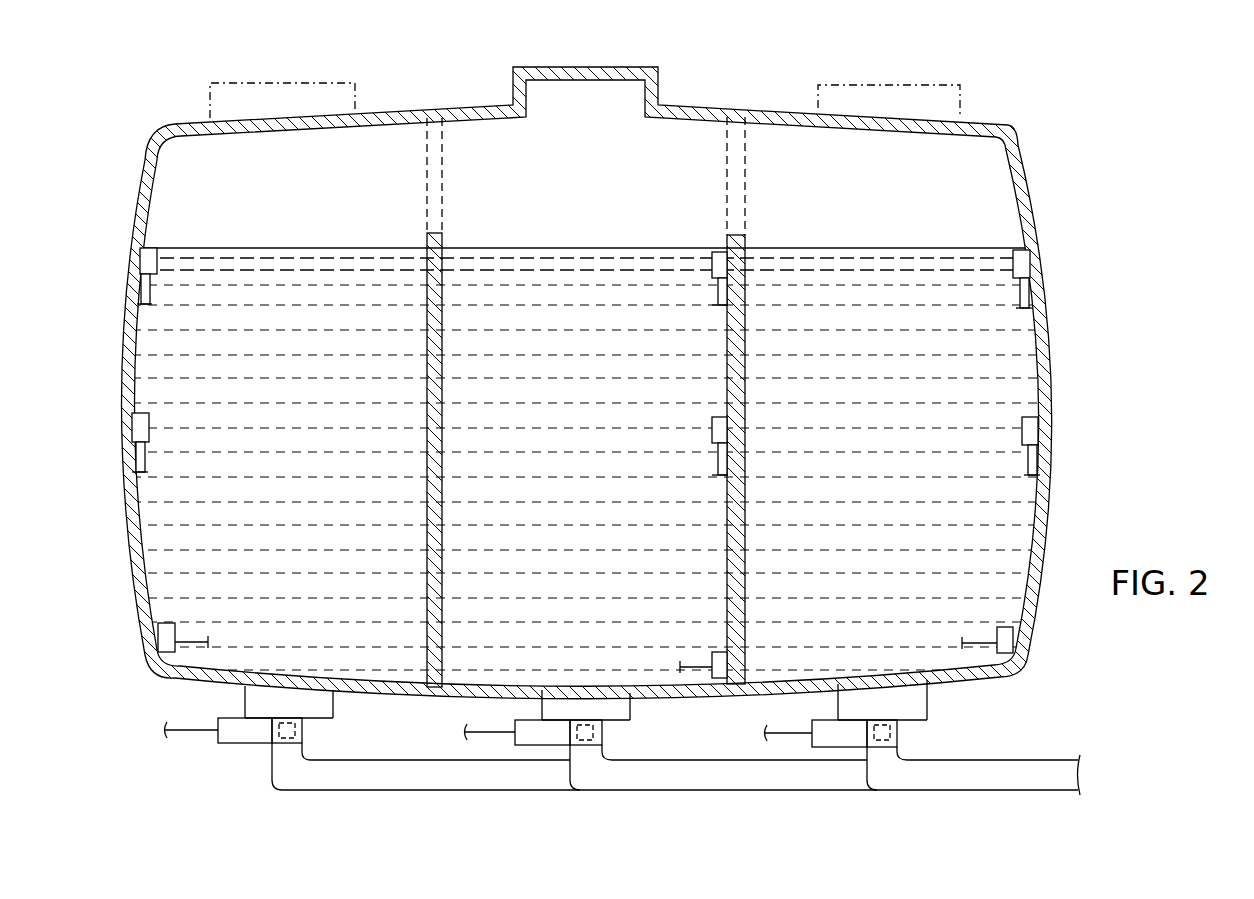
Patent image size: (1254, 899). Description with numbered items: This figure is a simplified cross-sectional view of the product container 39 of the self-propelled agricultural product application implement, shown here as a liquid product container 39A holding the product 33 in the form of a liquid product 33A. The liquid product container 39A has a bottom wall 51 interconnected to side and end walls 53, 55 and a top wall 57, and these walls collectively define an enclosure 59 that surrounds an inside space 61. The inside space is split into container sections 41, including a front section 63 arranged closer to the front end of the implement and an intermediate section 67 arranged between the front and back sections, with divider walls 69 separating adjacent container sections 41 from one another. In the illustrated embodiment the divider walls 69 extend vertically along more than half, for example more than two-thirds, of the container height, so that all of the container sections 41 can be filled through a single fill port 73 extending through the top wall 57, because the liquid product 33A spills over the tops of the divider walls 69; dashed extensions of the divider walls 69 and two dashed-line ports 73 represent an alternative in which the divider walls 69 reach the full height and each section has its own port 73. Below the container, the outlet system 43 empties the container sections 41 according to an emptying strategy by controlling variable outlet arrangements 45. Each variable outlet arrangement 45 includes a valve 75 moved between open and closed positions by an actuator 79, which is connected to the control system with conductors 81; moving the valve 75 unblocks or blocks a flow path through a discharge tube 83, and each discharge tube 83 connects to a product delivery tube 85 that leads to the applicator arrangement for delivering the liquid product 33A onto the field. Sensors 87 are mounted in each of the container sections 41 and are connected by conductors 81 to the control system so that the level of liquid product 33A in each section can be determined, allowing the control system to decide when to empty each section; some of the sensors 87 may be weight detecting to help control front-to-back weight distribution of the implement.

The product 33 is at (314, 178).
The liquid product 33A is at (184, 264).
The product container 39 is at (1042, 44).
The liquid product container 39A is at (1014, 130).
The container sections 41 is at (240, 110).
The outlet system 43 is at (160, 800).
The variable outlet arrangements 45 is at (312, 735).
The bottom wall 51 is at (494, 688).
The side walls 53 is at (998, 220).
The end walls 55 is at (139, 178).
The top wall 57 is at (697, 100).
The enclosure 59 is at (738, 100).
The inside space 61 is at (775, 150).
The front section 63 is at (180, 537).
The intermediate section 67 is at (478, 512).
The divider walls 69 is at (440, 455).
The fill port 73 is at (322, 82).
The valve 75 is at (290, 745).
The actuator 79 is at (243, 733).
The conductors 81 is at (146, 290).
The discharge tube 83 is at (300, 765).
The product delivery tube 85 is at (712, 792).
The sensors 87 is at (147, 262).